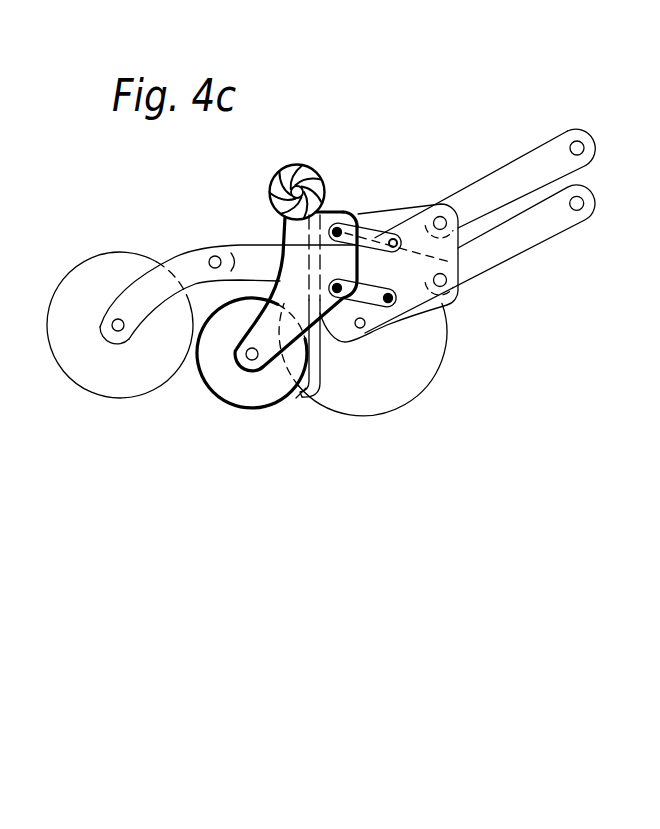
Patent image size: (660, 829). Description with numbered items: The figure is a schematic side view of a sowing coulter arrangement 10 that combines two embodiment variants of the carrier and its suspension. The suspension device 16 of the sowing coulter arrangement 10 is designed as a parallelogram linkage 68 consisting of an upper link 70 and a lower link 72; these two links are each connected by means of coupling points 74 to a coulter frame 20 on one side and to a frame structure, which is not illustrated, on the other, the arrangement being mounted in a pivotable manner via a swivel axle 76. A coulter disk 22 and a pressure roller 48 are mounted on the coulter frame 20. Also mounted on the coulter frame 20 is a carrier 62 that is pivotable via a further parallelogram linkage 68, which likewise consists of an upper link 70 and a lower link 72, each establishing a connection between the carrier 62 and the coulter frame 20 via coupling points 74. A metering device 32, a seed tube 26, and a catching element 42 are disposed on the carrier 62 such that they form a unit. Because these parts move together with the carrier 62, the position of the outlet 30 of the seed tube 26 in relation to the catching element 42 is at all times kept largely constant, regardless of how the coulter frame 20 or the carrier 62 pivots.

The sowing coulter arrangement 10 is at (388, 133).
The suspension device 16 is at (607, 149).
The coulter frame 20 is at (402, 279).
The coulter disk 22 is at (358, 375).
The seed tube 26 is at (329, 312).
The outlet 30 is at (300, 394).
The metering device 32 is at (287, 163).
The catching element 42 is at (263, 400).
The pressure roller 48 is at (116, 378).
The carrier 62 is at (311, 282).
The parallelogram linkage 68 is at (359, 214).
The upper link 70 is at (378, 226).
The lower link 72 is at (540, 249).
The coupling points 74 is at (337, 230).
The swivel axle 76 is at (580, 210).